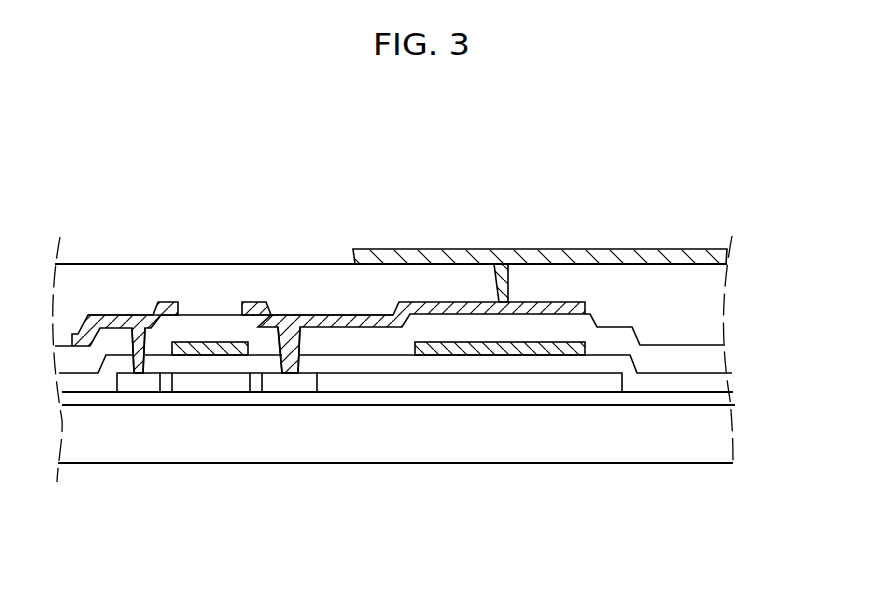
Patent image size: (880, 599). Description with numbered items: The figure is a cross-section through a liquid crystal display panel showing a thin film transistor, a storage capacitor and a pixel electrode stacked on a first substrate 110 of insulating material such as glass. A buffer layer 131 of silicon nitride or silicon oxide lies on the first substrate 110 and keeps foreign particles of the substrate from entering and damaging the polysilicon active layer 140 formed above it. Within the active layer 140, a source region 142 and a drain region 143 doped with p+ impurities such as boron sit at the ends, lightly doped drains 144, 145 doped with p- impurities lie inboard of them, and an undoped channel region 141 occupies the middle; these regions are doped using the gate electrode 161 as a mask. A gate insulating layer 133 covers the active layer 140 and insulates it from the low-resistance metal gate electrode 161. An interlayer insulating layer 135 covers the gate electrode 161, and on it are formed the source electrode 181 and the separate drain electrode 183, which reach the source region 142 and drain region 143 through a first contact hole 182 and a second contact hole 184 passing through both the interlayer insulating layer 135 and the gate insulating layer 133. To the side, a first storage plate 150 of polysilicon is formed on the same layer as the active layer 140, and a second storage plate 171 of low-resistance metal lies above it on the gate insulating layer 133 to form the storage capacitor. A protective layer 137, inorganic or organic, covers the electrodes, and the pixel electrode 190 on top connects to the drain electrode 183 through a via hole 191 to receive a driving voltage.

The first substrate 110 is at (732, 442).
The buffer layer 131 is at (732, 403).
The gate insulating layer 133 is at (728, 378).
The interlayer insulating layer 135 is at (723, 355).
The protective layer 137 is at (717, 299).
The active layer 140 is at (348, 522).
The channel region 141 is at (208, 388).
The source region 142 is at (138, 388).
The drain region 143 is at (293, 390).
The lightly doped drain 144 is at (167, 390).
The lightly doped drain 145 is at (256, 390).
The first storage plate 150 is at (499, 388).
The gate electrode 161 is at (205, 347).
The second storage plate 171 is at (445, 340).
The source electrode 181 is at (122, 318).
The first contact hole 182 is at (139, 334).
The drain electrode 183 is at (258, 304).
The second contact hole 184 is at (298, 318).
The pixel electrode 190 is at (536, 250).
The via hole 191 is at (500, 272).